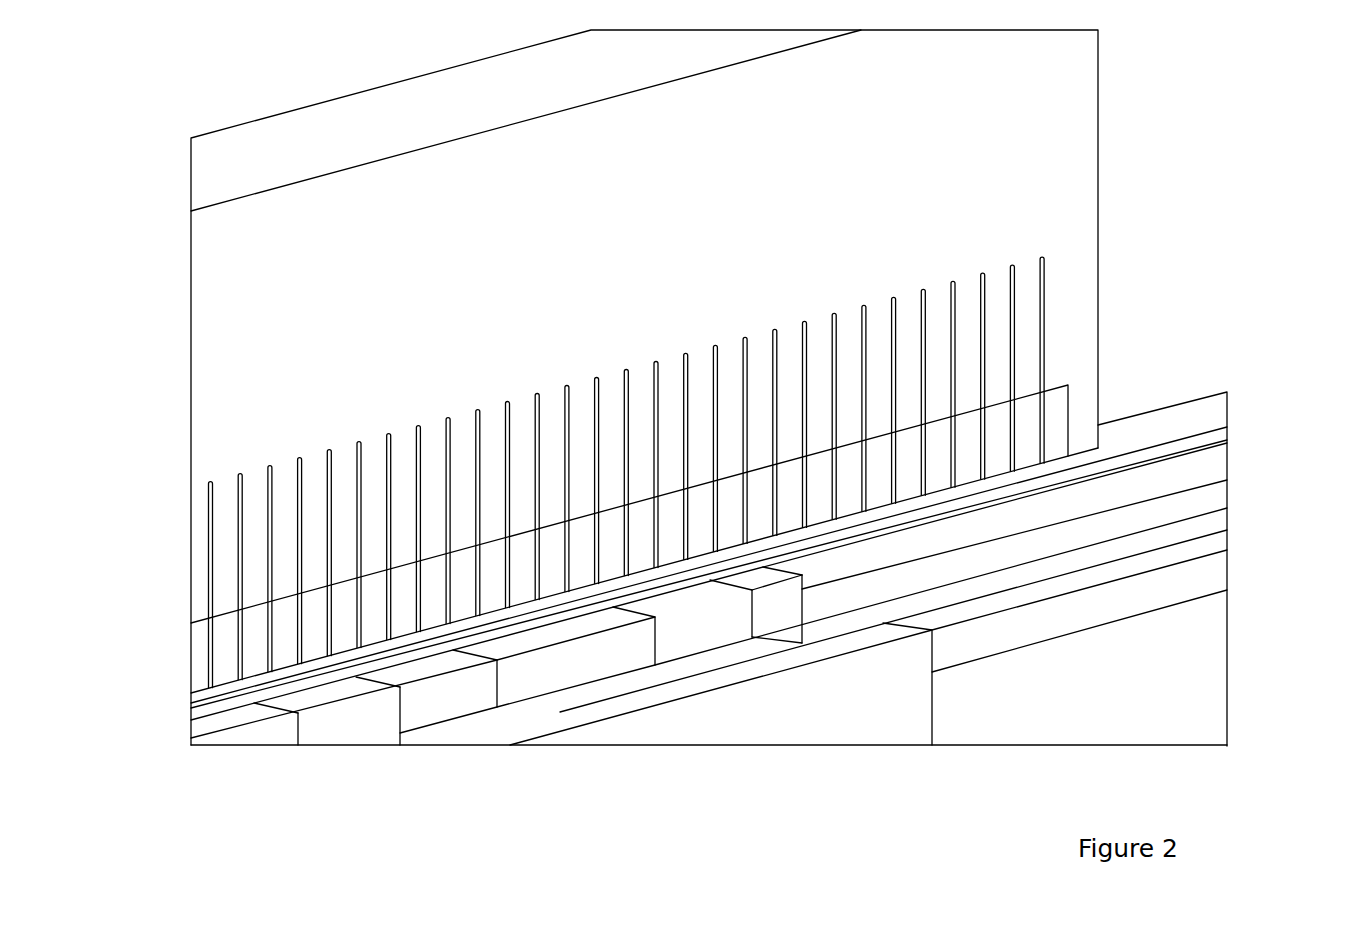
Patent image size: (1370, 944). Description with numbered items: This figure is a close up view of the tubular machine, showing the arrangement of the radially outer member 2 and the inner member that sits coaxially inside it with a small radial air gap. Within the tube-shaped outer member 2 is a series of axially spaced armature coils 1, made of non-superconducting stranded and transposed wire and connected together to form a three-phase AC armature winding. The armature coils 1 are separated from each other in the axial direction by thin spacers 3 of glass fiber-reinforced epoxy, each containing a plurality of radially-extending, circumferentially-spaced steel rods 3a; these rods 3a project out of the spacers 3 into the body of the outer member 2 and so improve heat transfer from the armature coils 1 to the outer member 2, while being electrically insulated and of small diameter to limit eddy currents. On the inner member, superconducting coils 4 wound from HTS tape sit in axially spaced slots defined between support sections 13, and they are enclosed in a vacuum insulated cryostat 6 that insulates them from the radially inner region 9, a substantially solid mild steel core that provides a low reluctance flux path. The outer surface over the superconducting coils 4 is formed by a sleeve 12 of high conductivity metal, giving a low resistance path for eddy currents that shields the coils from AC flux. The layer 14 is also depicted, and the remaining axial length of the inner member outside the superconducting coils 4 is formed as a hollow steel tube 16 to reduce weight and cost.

The armature coils 1 is at (1053, 417).
The radially outer member 2 is at (960, 170).
The spacers 3 is at (242, 640).
The steel rods 3a is at (212, 513).
The superconducting coils 4 is at (365, 727).
The cryostat 6 is at (1167, 448).
The radially inner region 9 is at (794, 713).
The sleeve 12 is at (248, 683).
The support sections 13 is at (566, 664).
The intermediate layer 14 is at (1195, 527).
The hollow steel tube 16 is at (1078, 604).